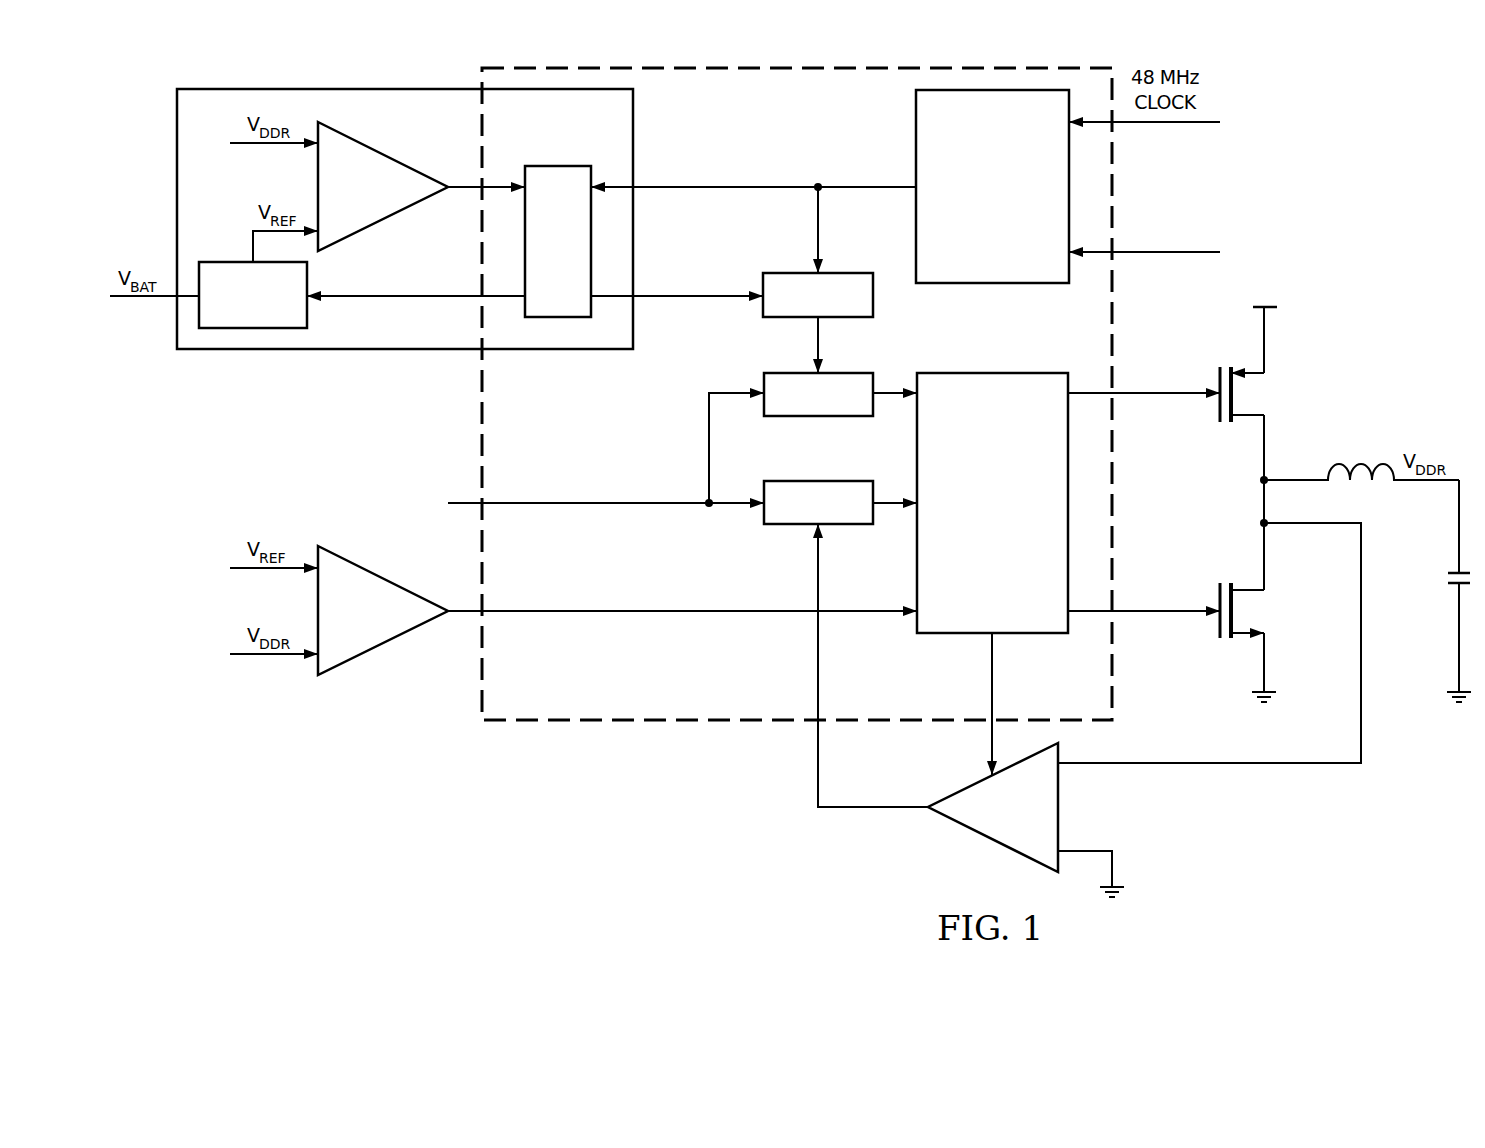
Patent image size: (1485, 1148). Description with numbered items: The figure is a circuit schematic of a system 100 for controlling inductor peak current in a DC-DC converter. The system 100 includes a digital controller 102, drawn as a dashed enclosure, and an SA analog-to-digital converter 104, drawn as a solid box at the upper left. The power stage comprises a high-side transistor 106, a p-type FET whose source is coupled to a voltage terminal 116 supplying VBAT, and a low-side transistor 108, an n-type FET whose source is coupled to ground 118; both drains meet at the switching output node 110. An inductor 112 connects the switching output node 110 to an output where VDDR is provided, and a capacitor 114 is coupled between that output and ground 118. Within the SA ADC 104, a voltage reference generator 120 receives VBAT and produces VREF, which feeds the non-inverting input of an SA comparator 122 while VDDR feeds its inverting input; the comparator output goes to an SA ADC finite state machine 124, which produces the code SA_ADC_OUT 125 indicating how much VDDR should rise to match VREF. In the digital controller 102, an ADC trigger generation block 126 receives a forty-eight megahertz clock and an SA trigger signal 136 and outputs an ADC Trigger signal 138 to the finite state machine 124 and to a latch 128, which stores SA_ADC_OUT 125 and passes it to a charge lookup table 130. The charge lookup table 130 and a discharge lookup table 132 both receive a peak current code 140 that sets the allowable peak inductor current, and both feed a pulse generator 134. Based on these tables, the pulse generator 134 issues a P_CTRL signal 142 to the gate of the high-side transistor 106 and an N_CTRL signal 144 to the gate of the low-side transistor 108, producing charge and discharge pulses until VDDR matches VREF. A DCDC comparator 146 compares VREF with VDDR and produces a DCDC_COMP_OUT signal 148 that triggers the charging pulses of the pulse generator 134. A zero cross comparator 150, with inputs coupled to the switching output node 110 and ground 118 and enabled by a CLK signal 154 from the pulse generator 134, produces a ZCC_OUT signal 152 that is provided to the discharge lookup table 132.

The system 100 is at (1280, 110).
The digital controller 102 is at (743, 722).
The SA analog-to-digital converter 104 is at (177, 185).
The high-side transistor 106 is at (1215, 377).
The low-side transistor 108 is at (1215, 590).
The switching output node 110 is at (1268, 474).
The inductor 112 is at (1372, 462).
The capacitor 114 is at (1447, 578).
The voltage terminal 116 is at (1268, 308).
The ground 118 is at (1280, 698).
The voltage reference generator 120 is at (220, 262).
The SA comparator 122 is at (375, 150).
The SA ADC finite state machine 124 is at (558, 166).
The SA_ADC_OUT signal 125 is at (707, 298).
The ADC trigger generation block 126 is at (973, 236).
The latch 128 is at (840, 272).
The charge lookup table 130 is at (797, 418).
The discharge lookup table 132 is at (840, 480).
The pulse generator 134 is at (973, 551).
The SA trigger signal 136 is at (1165, 253).
The ADC Trigger signal 138 is at (760, 190).
The peak current code 140 is at (587, 504).
The P_CTRL signal 142 is at (1167, 396).
The N_CTRL signal 144 is at (1167, 614).
The DCDC comparator 146 is at (388, 642).
The DCDC_COMP_OUT signal 148 is at (647, 614).
The zero cross comparator 150 is at (982, 838).
The ZCC_OUT signal 152 is at (870, 810).
The CLK signal 154 is at (994, 677).